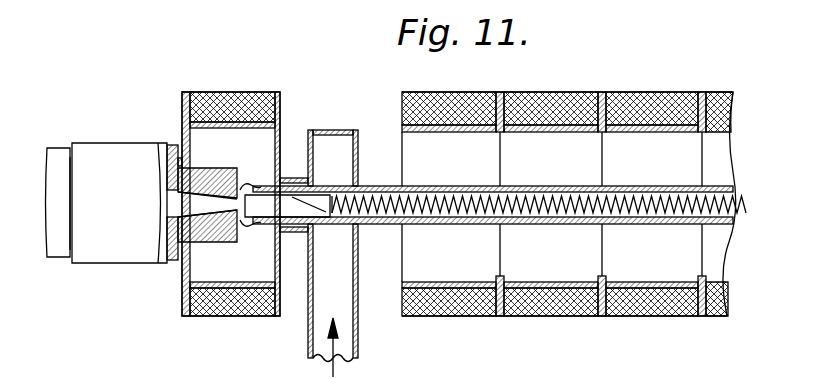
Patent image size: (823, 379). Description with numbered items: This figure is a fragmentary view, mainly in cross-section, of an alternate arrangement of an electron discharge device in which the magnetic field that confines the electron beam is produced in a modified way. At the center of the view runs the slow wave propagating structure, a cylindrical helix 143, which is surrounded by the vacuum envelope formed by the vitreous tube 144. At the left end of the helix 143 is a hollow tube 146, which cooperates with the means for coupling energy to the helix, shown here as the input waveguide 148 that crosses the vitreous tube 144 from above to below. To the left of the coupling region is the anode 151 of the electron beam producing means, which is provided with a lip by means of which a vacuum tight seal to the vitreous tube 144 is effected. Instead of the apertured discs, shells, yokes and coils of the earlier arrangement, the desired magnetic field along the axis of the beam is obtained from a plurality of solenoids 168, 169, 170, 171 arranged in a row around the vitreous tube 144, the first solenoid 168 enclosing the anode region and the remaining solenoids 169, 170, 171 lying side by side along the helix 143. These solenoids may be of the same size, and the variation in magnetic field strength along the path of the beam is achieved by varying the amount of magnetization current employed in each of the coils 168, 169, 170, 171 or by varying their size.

The cylindrical helix 143 is at (456, 187).
The vitreous tube 144 is at (556, 187).
The hollow tube 146 is at (268, 224).
The input waveguide 148 is at (359, 325).
The anode 151 is at (178, 146).
The solenoid 168 is at (227, 318).
The solenoid 169 is at (470, 317).
The solenoid 170 is at (560, 317).
The solenoid 171 is at (664, 317).